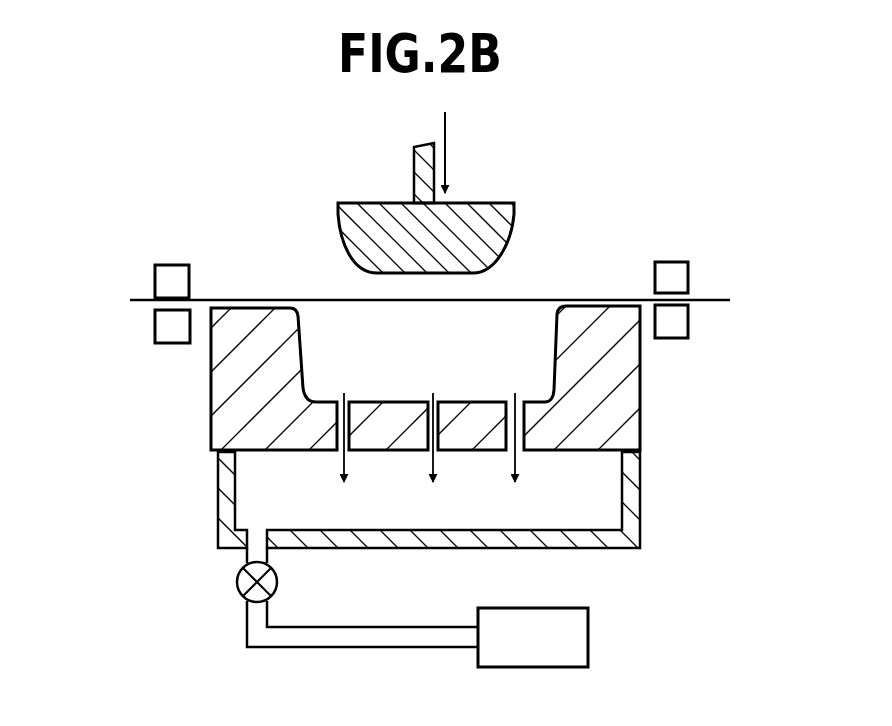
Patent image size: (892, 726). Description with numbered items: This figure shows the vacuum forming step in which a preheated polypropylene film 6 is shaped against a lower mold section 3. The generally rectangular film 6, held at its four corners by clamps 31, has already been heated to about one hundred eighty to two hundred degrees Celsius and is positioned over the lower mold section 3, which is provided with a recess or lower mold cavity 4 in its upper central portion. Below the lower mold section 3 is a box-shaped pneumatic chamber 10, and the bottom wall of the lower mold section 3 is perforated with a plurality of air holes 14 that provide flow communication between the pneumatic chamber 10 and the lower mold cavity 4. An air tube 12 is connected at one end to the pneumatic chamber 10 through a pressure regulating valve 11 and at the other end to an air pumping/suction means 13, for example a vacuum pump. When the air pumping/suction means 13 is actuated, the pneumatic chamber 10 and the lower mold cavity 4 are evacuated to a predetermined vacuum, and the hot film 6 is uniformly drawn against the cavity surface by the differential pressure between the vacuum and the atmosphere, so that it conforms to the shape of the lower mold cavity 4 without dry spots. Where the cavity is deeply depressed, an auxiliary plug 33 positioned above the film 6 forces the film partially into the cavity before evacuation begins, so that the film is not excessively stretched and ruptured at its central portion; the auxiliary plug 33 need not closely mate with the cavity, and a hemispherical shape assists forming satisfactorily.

The lower mold section 3 is at (625, 369).
The lower mold cavity 4 is at (341, 355).
The polypropylene film 6 is at (245, 299).
The pneumatic chamber 10 is at (592, 490).
The pressure regulating valve 11 is at (247, 585).
The air tube 12 is at (298, 638).
The air pumping/suction means 13 is at (577, 628).
The air holes 14 is at (343, 450).
The clamps 31 is at (673, 323).
The auxiliary plug 33 is at (490, 224).